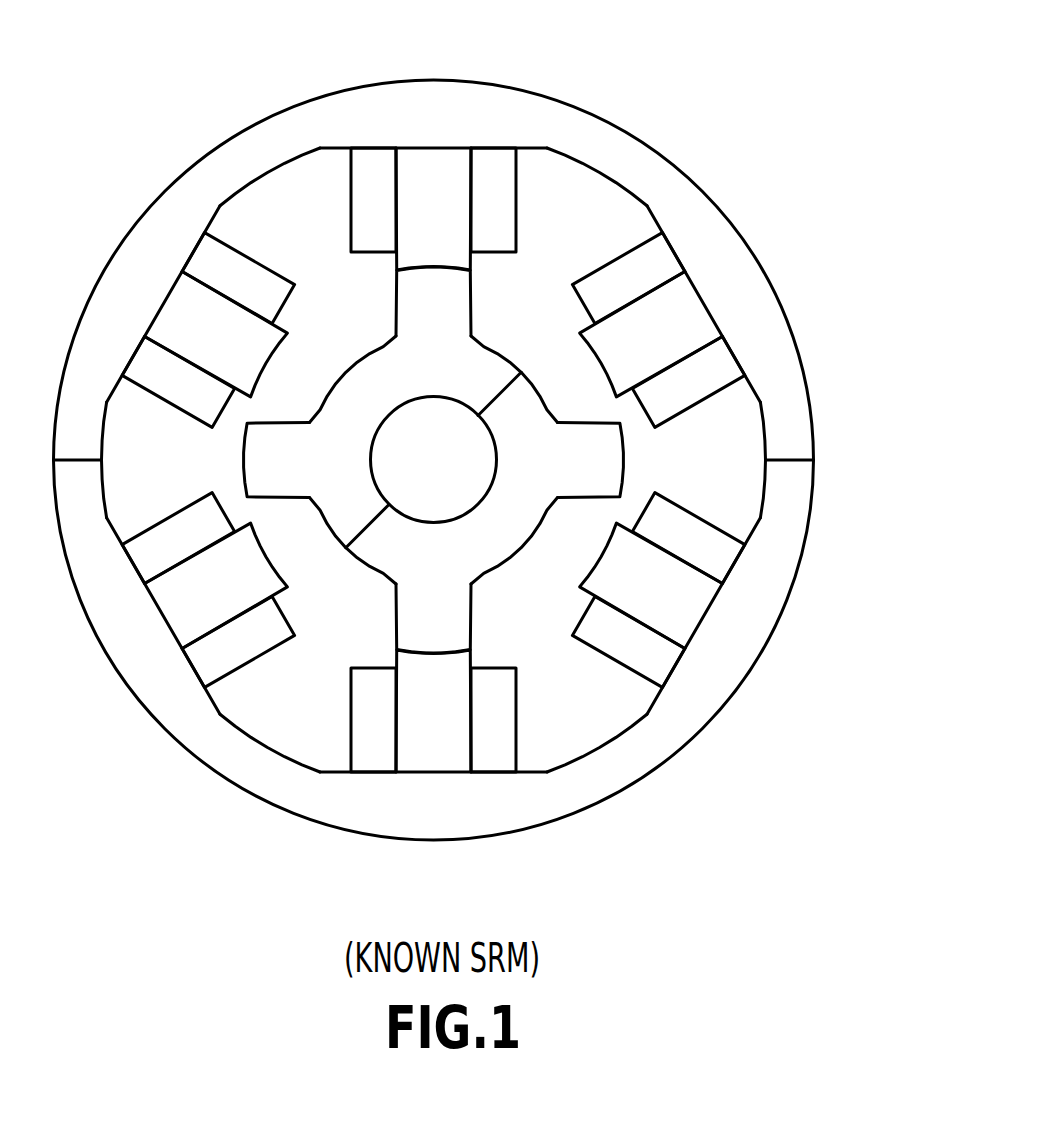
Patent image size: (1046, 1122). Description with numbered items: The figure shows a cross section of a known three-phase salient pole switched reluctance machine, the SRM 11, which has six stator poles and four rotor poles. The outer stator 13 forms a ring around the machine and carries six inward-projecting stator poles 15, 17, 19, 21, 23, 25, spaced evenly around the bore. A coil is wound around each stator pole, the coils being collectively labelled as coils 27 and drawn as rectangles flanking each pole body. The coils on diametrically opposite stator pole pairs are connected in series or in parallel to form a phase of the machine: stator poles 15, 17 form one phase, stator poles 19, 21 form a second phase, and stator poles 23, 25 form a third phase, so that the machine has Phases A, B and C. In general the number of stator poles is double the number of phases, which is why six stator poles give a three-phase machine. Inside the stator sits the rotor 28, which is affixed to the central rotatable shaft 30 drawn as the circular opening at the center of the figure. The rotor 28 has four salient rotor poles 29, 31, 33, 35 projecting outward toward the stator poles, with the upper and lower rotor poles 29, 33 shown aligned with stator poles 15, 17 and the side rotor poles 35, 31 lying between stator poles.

The salient pole SRM 11 is at (672, 107).
The outer stator 13 is at (790, 524).
The stator pole 15 is at (433, 183).
The stator pole 17 is at (437, 742).
The stator pole 19 is at (697, 312).
The stator pole 21 is at (173, 603).
The stator pole 23 is at (708, 615).
The stator pole 25 is at (175, 308).
The coil 27 is at (373, 198).
The rotor 28 is at (490, 372).
The rotor pole 29 is at (450, 297).
The central rotatable shaft 30 is at (458, 485).
The rotor pole 31 is at (603, 460).
The rotor pole 33 is at (448, 618).
The rotor pole 35 is at (265, 457).